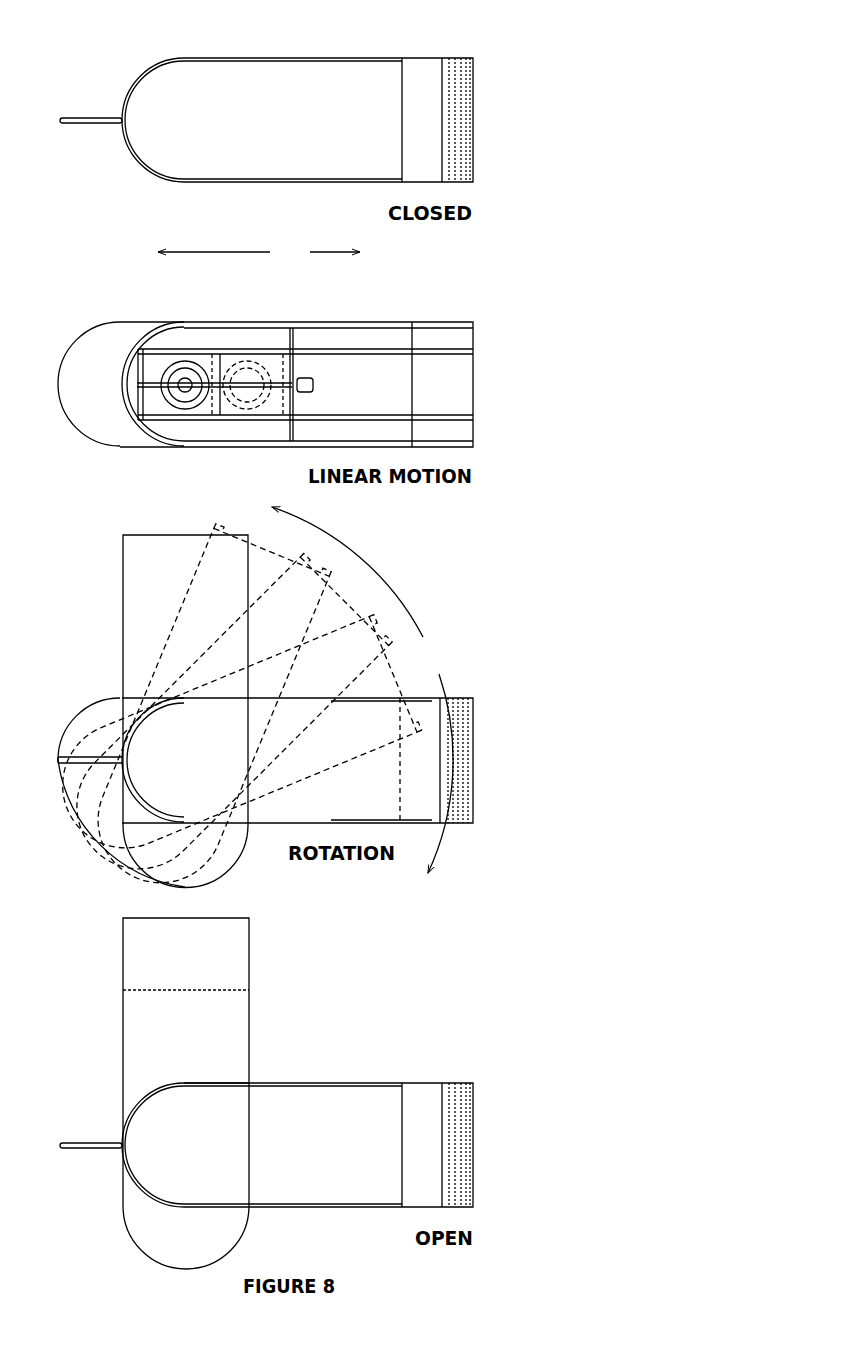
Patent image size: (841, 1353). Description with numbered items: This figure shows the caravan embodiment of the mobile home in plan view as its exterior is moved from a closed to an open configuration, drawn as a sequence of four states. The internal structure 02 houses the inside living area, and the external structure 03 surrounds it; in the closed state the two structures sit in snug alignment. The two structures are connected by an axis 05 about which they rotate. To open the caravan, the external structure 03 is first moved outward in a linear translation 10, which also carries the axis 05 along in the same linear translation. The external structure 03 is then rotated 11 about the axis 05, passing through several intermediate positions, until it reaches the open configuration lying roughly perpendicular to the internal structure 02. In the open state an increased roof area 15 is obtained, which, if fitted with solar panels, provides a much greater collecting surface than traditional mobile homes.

The internal structure 02 is at (123, 447).
The external structure 03 is at (265, 58).
The axis 05 is at (185, 358).
The linear translation 10 is at (259, 252).
The rotation 11 is at (362, 690).
The increased roof area 15 is at (223, 1047).